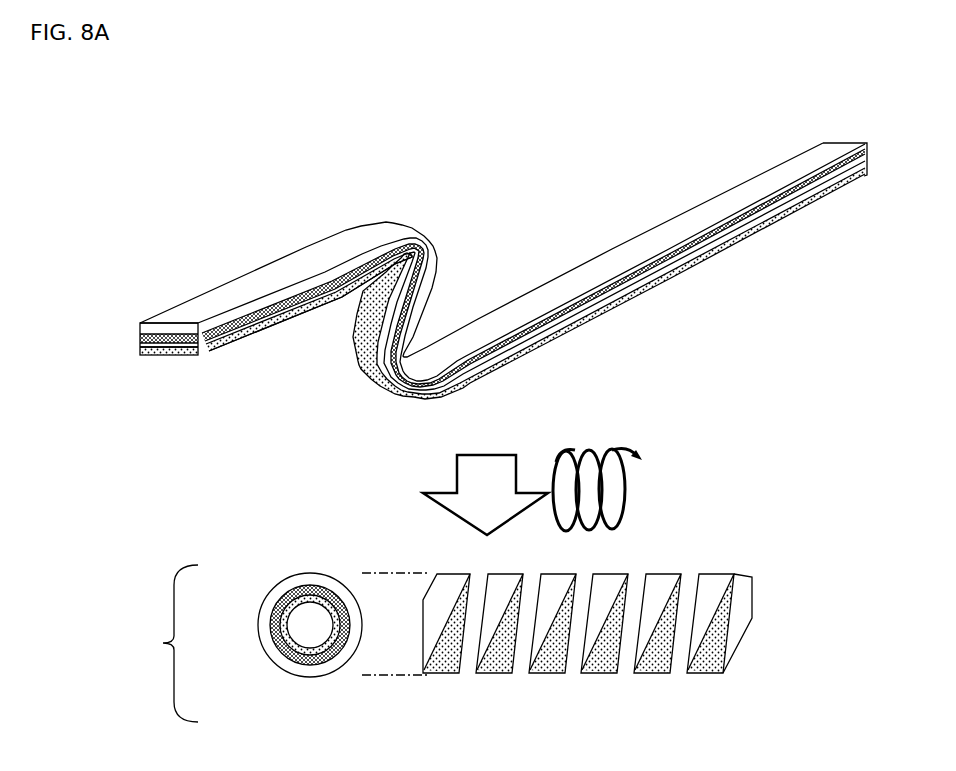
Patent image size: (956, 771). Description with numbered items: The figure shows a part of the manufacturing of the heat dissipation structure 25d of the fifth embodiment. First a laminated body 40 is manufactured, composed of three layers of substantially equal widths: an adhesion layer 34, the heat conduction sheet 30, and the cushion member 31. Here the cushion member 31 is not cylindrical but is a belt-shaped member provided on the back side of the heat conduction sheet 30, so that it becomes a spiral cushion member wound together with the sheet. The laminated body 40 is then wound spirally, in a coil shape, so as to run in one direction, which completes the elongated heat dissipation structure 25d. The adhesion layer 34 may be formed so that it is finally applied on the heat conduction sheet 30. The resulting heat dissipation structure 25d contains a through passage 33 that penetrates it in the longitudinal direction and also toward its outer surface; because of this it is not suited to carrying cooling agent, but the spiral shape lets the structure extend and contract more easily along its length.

The laminated body 40 is at (742, 246).
The adhesion layer 34 is at (217, 298).
The through passage 33 is at (270, 641).
The heat conduction sheet 30 is at (140, 343).
The cushion member 31 is at (383, 346).
The heat dissipation structure 25d is at (164, 643).